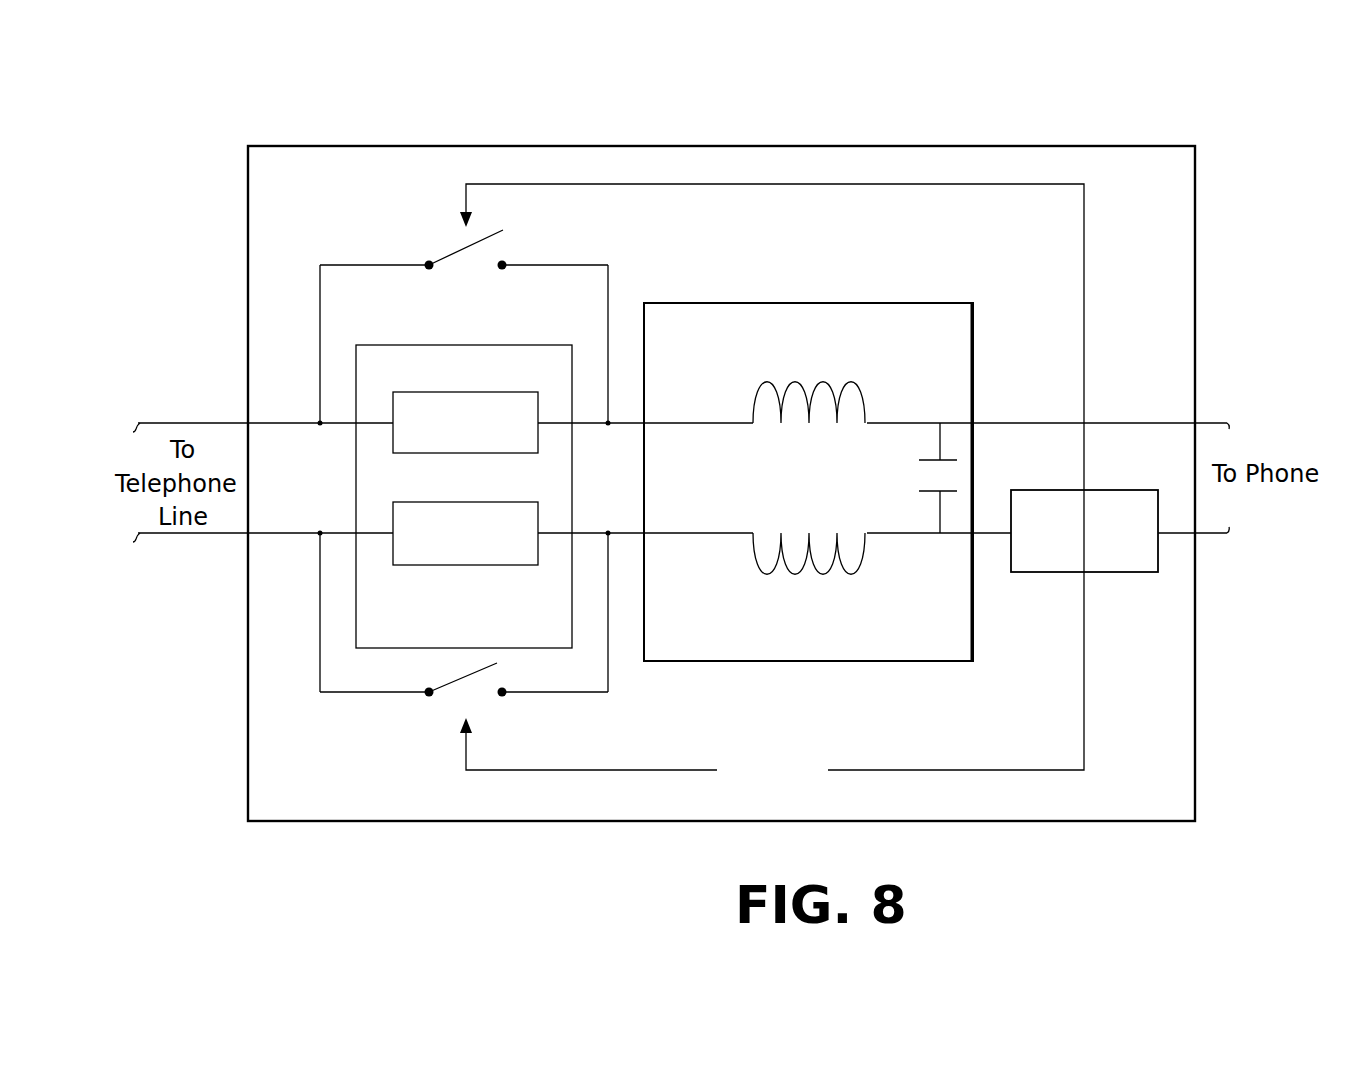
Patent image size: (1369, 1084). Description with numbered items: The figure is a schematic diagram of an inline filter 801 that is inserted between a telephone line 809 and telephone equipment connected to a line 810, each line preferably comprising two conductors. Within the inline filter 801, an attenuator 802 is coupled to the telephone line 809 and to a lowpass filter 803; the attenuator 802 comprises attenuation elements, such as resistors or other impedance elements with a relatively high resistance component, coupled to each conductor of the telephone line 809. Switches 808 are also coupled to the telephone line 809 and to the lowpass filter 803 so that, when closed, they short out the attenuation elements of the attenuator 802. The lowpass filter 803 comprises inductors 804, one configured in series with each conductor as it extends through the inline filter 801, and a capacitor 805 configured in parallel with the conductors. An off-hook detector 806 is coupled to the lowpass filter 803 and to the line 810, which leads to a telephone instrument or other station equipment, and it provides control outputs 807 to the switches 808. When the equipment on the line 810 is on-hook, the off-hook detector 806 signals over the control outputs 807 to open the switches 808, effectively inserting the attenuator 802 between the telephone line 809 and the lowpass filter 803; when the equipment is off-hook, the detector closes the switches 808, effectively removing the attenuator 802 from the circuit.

The inline filter 801 is at (390, 130).
The attenuator 802 is at (424, 496).
The lowpass filter 803 is at (975, 645).
The inductors 804 is at (802, 384).
The capacitor 805 is at (922, 472).
The off-hook detector 806 is at (1134, 486).
The control outputs 807 is at (1085, 650).
The switches 808 is at (455, 238).
The telephone line 809 is at (158, 420).
The line 810 is at (1221, 417).